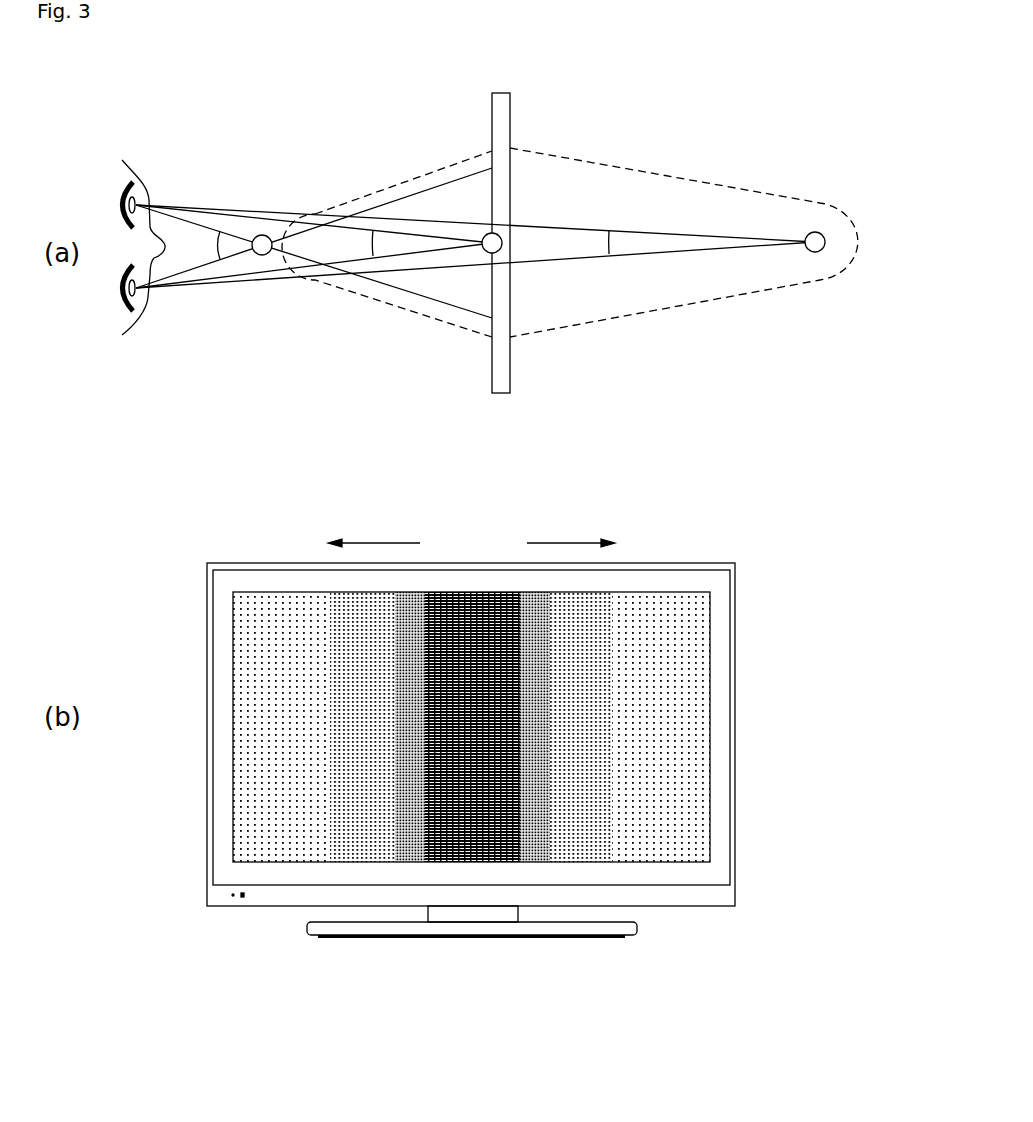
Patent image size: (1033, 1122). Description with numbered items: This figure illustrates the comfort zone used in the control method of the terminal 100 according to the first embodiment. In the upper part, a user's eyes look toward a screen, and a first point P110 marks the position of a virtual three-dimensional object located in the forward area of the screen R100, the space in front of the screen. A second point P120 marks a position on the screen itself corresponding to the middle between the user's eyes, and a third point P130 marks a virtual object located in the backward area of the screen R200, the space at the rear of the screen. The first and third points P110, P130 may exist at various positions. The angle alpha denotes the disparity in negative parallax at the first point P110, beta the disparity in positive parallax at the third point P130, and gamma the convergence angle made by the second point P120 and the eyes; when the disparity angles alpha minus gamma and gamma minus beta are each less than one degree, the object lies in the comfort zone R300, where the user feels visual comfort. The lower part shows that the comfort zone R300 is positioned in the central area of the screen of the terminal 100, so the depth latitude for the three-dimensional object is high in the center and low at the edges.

The first point P110 is at (262, 235).
The second point P120 is at (488, 236).
The third point P130 is at (817, 232).
The forward area of the screen R100 is at (318, 385).
The backward area of the screen R200 is at (712, 385).
The comfort zone R300 is at (718, 183).
The terminal 100 is at (735, 549).